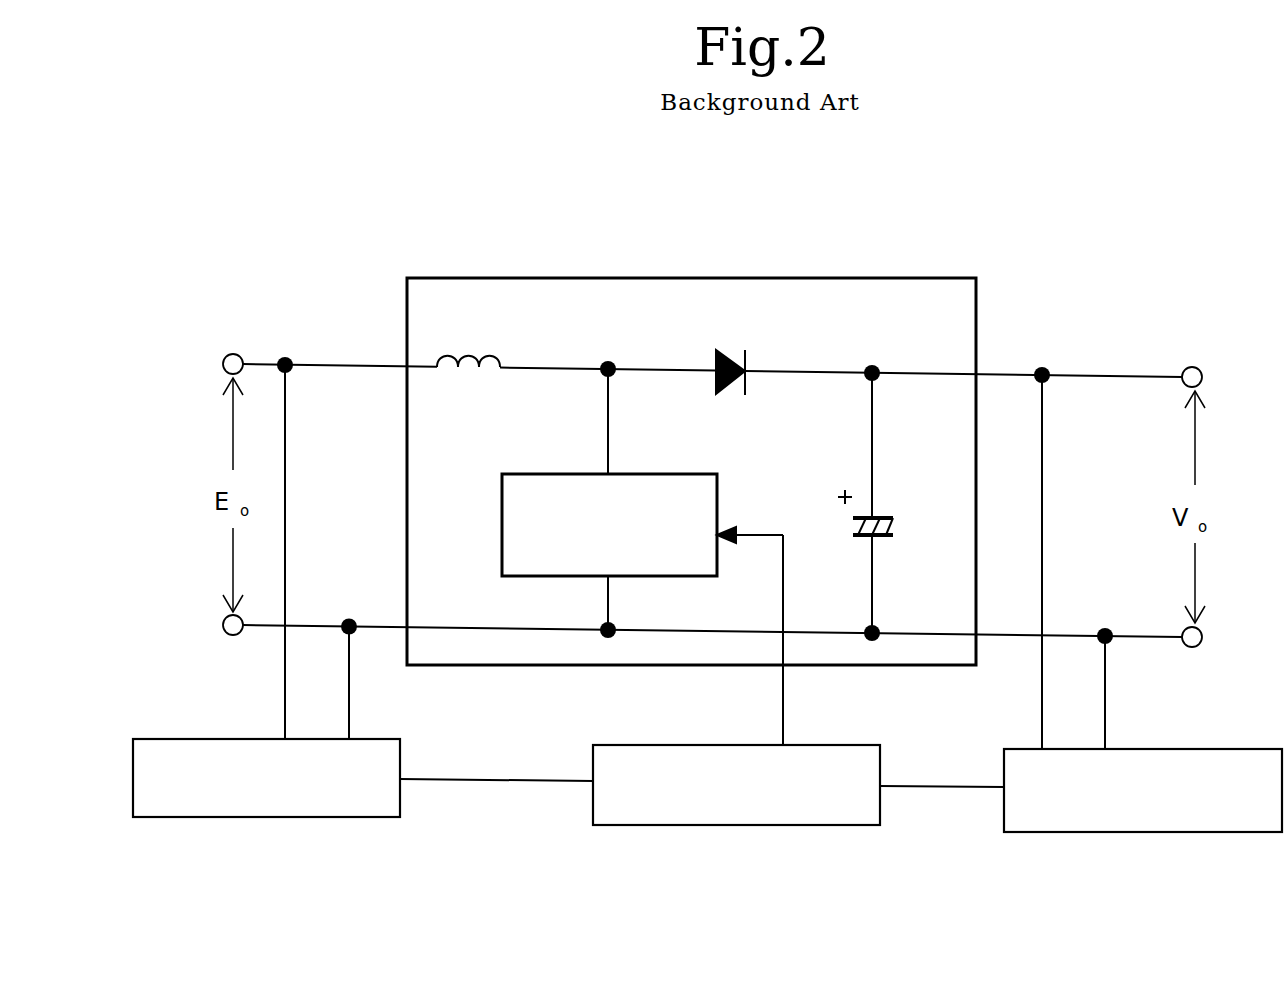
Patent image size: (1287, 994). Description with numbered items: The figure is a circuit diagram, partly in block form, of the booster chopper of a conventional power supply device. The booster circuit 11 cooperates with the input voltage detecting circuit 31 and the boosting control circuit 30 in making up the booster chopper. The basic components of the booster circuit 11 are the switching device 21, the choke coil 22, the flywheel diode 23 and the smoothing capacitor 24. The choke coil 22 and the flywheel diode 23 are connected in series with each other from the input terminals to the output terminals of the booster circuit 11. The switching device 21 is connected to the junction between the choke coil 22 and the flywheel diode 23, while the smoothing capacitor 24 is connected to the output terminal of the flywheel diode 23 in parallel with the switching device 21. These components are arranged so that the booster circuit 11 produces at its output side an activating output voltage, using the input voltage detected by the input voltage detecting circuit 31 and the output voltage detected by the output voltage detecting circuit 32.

The booster circuit 11 is at (896, 280).
The switching device 21 is at (678, 474).
The choke coil 22 is at (458, 378).
The flywheel diode 23 is at (732, 352).
The smoothing capacitor 24 is at (880, 512).
The boosting control circuit 30 is at (812, 745).
The input voltage detecting circuit 31 is at (390, 738).
The output voltage detecting circuit 32 is at (1136, 749).